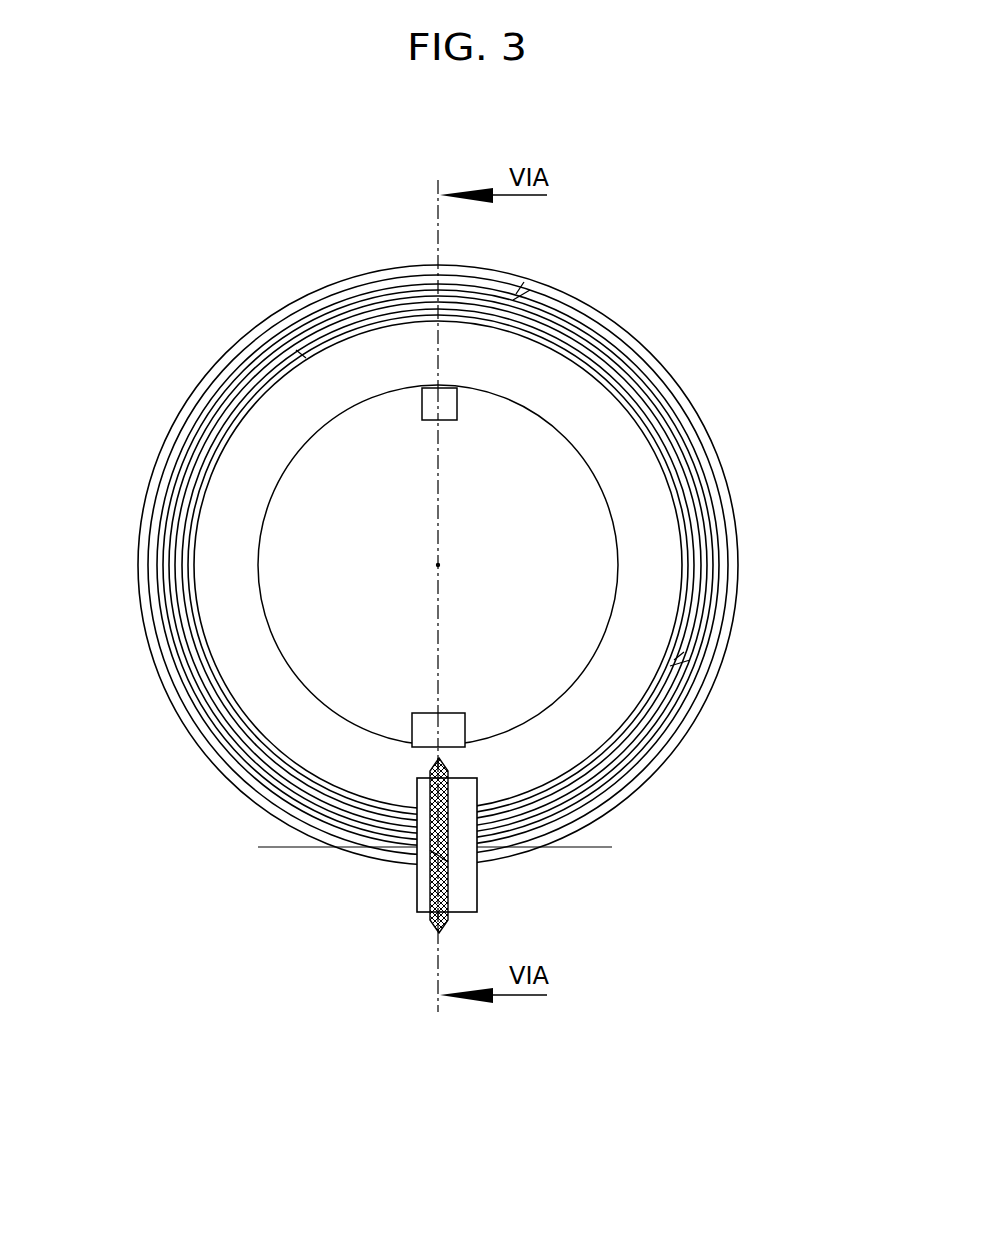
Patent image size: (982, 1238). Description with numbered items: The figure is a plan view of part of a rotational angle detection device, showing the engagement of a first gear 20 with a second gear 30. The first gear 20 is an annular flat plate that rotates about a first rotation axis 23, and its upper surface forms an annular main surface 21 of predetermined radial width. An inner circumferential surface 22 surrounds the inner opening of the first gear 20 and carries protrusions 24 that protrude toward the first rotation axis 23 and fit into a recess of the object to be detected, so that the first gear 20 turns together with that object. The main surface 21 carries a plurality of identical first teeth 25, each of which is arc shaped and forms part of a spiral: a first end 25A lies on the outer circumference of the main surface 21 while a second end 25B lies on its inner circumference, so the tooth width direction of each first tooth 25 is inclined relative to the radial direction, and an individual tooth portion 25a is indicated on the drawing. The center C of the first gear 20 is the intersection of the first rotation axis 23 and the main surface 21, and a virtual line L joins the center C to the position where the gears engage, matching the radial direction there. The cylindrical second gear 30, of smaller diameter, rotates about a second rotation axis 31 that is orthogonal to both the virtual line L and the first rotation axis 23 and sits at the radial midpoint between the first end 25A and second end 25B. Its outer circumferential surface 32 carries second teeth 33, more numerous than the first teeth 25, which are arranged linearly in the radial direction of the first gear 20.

The first gear 20 is at (680, 356).
The main surface 21 is at (733, 537).
The inner circumferential surface 22 is at (532, 415).
The first rotation axis 23 is at (439, 566).
The protrusion 24 is at (428, 424).
The first teeth 25 is at (172, 430).
The first end 25A is at (522, 289).
The second end 25B is at (676, 657).
The winding of coil spring 25a is at (300, 352).
The second gear 30 is at (486, 896).
The second rotation axis 31 is at (614, 848).
The outer circumferential surface 32 is at (428, 908).
The second teeth 33 is at (428, 858).
The virtual line L is at (437, 222).
The center C is at (437, 566).